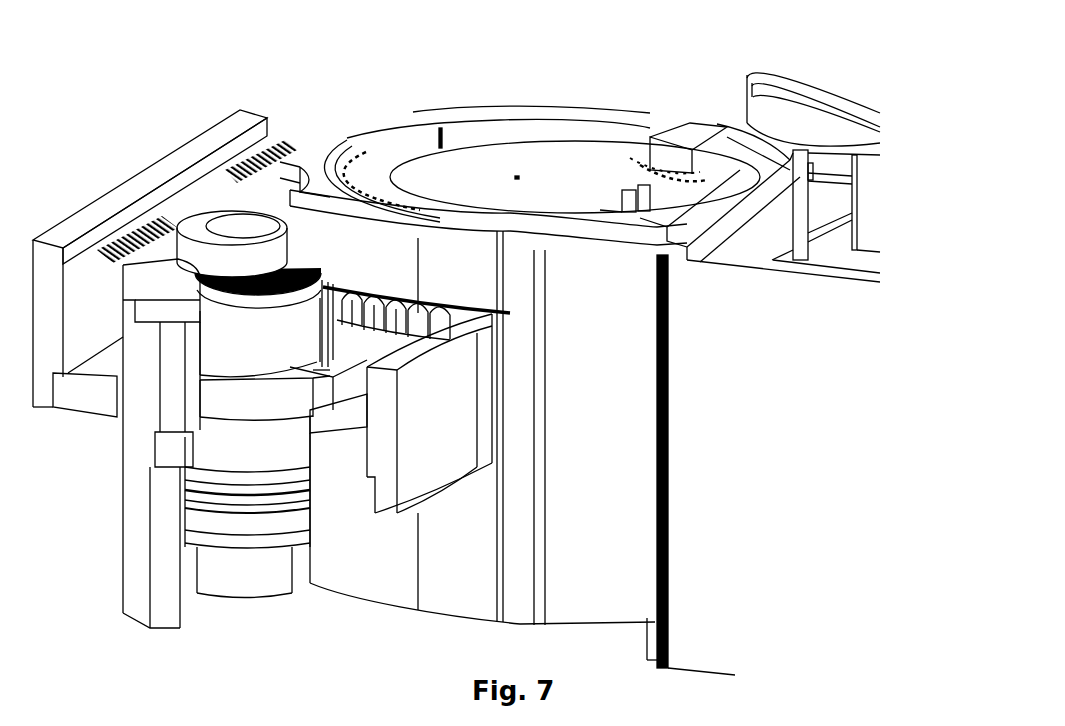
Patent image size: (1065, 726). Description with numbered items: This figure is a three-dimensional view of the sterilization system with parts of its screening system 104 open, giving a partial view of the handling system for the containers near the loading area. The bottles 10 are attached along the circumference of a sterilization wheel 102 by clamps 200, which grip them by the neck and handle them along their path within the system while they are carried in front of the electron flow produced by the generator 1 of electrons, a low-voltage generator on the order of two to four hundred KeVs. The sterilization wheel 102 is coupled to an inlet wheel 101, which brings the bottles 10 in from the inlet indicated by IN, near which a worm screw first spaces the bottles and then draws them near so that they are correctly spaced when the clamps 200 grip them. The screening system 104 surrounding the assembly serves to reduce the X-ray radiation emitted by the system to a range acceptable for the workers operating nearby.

The generator of electrons 1 is at (779, 83).
The bottles 10 is at (373, 312).
The inlet wheel 101 is at (237, 220).
The sterilization wheel 102 is at (537, 143).
The screening system 104 is at (167, 573).
The clamps 200 is at (222, 276).
The inlet IN is at (104, 357).